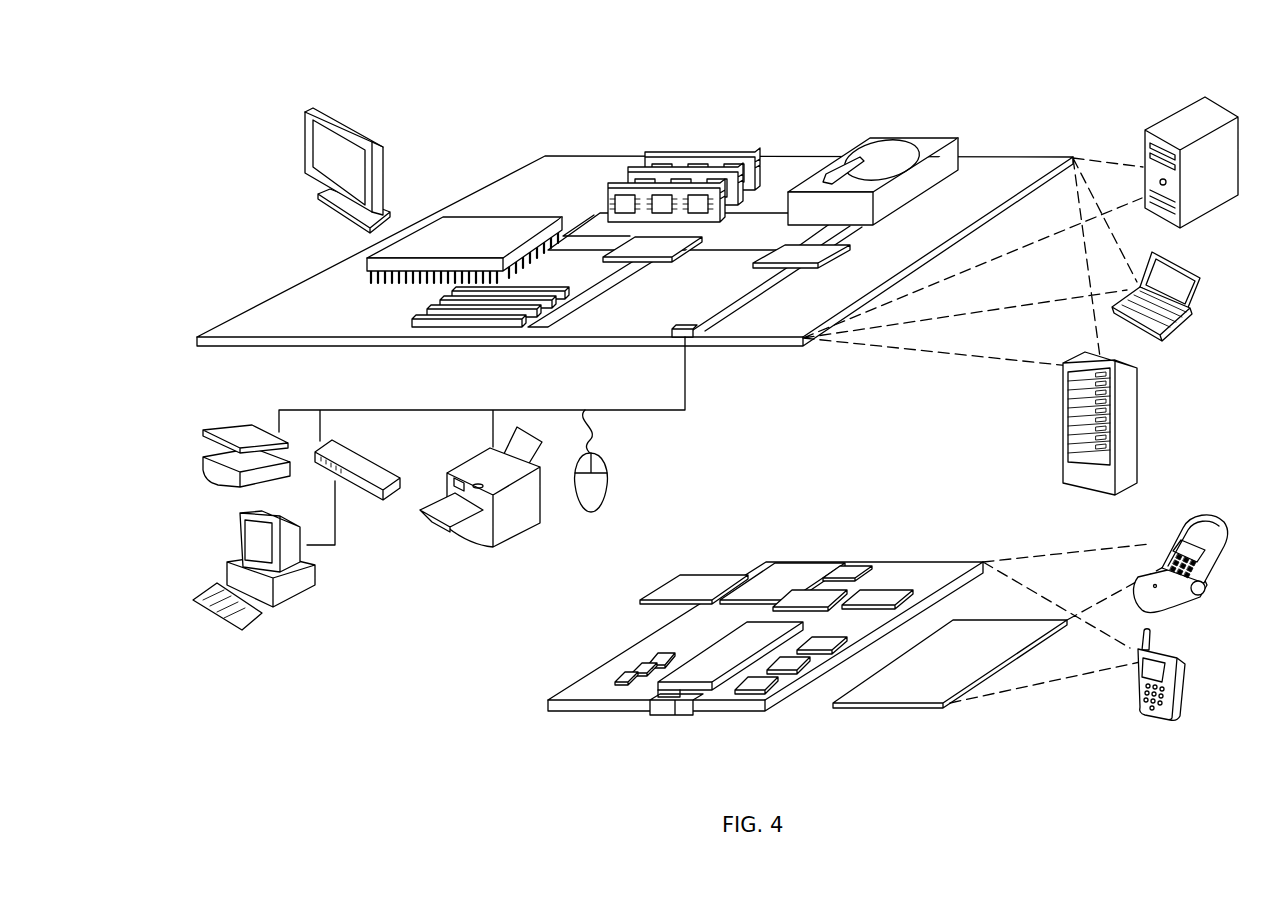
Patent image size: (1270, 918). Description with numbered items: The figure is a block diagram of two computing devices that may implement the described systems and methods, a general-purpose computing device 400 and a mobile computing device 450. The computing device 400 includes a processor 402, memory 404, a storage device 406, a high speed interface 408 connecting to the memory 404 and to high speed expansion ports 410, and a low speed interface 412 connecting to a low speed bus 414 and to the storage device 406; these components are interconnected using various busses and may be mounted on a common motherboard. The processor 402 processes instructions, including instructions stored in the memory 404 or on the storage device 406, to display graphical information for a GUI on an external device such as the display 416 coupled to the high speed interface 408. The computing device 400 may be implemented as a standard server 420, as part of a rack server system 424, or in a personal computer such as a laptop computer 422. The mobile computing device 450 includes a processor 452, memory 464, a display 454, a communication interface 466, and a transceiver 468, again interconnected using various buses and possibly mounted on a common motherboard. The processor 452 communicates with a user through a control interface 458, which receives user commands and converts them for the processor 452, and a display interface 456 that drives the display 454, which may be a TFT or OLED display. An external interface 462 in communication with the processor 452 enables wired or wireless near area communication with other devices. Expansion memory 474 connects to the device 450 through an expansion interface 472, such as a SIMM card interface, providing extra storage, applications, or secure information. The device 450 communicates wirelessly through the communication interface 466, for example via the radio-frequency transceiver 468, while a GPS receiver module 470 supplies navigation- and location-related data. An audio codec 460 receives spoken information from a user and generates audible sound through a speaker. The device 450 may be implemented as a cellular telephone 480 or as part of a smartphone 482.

The computing device 400 is at (480, 135).
The processor 402 is at (370, 263).
The memory 404 is at (655, 152).
The storage device 406 is at (865, 137).
The high speed interface 408 is at (630, 247).
The high speed expansion ports 410 is at (423, 312).
The low speed interface 412 is at (787, 248).
The low speed bus 414 is at (695, 334).
The display 416 is at (305, 112).
The standard server 420 is at (1145, 143).
The laptop computer 422 is at (1197, 275).
The rack server system 424 is at (1063, 448).
The computing device 450 is at (528, 708).
The processor 452 is at (705, 673).
The display 454 is at (913, 692).
The display interface 456 is at (765, 690).
The control interface 458 is at (792, 670).
The audio codec 460 is at (817, 650).
The external interface 462 is at (675, 703).
The memory 464 is at (632, 668).
The communication interface 466 is at (810, 597).
The transceiver 468 is at (877, 593).
The GPS receiver module 470 is at (857, 563).
The expansion interface 472 is at (748, 572).
The expansion memory 474 is at (678, 572).
The cellular telephone 480 is at (1188, 523).
The smartphone 482 is at (1127, 683).